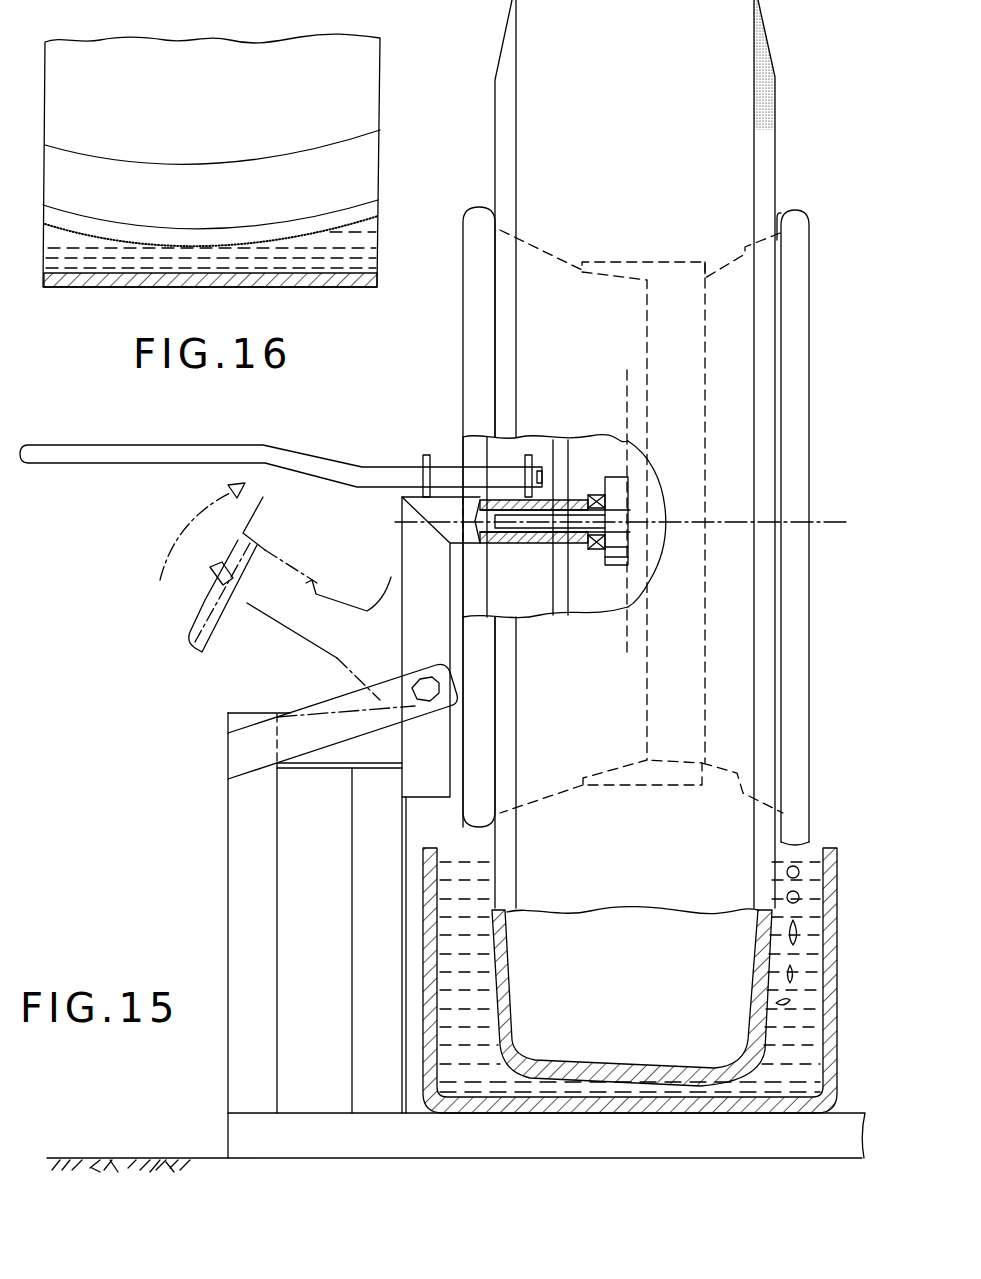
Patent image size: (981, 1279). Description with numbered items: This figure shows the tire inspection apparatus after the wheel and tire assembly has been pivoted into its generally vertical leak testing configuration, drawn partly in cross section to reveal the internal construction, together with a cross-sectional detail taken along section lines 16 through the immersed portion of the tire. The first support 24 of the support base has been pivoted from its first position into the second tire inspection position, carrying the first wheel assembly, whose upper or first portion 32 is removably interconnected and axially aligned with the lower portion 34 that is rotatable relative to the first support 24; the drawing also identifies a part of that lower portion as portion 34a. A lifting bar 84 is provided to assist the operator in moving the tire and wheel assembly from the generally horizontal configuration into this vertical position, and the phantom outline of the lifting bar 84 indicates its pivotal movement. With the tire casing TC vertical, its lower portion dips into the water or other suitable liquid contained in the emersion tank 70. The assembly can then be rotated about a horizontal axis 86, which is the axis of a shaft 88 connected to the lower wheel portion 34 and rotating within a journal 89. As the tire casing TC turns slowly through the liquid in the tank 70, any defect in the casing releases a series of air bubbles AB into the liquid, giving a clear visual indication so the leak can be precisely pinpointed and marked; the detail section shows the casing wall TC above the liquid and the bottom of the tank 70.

In FIG. 15, the section line for FIG. 16 is at (463, 895).
In FIG. 15, the first support 24 is at (215, 854).
In FIG. 15, the upper or first portion of first wheel assembly 32 is at (812, 434).
In FIG. 15, the second or lower portion of first wheel assembly 34 is at (463, 393).
In FIG. 15, the electrode tube inner portion 34a is at (612, 455).
In FIG. 16, the emersion tank 70 is at (80, 287).
In FIG. 15, the emersion tank 70 is at (425, 997).
In FIG. 15, the lifting bar 84 is at (133, 445).
In FIG. 15, the horizontal axis 86 is at (828, 522).
In FIG. 15, the shaft 88 is at (516, 530).
In FIG. 15, the journal 89 is at (577, 545).
In FIG. 16, the tire casing TC is at (218, 117).
In FIG. 15, the tire casing TC is at (768, 40).
In FIG. 15, the air bubbles AB is at (785, 897).